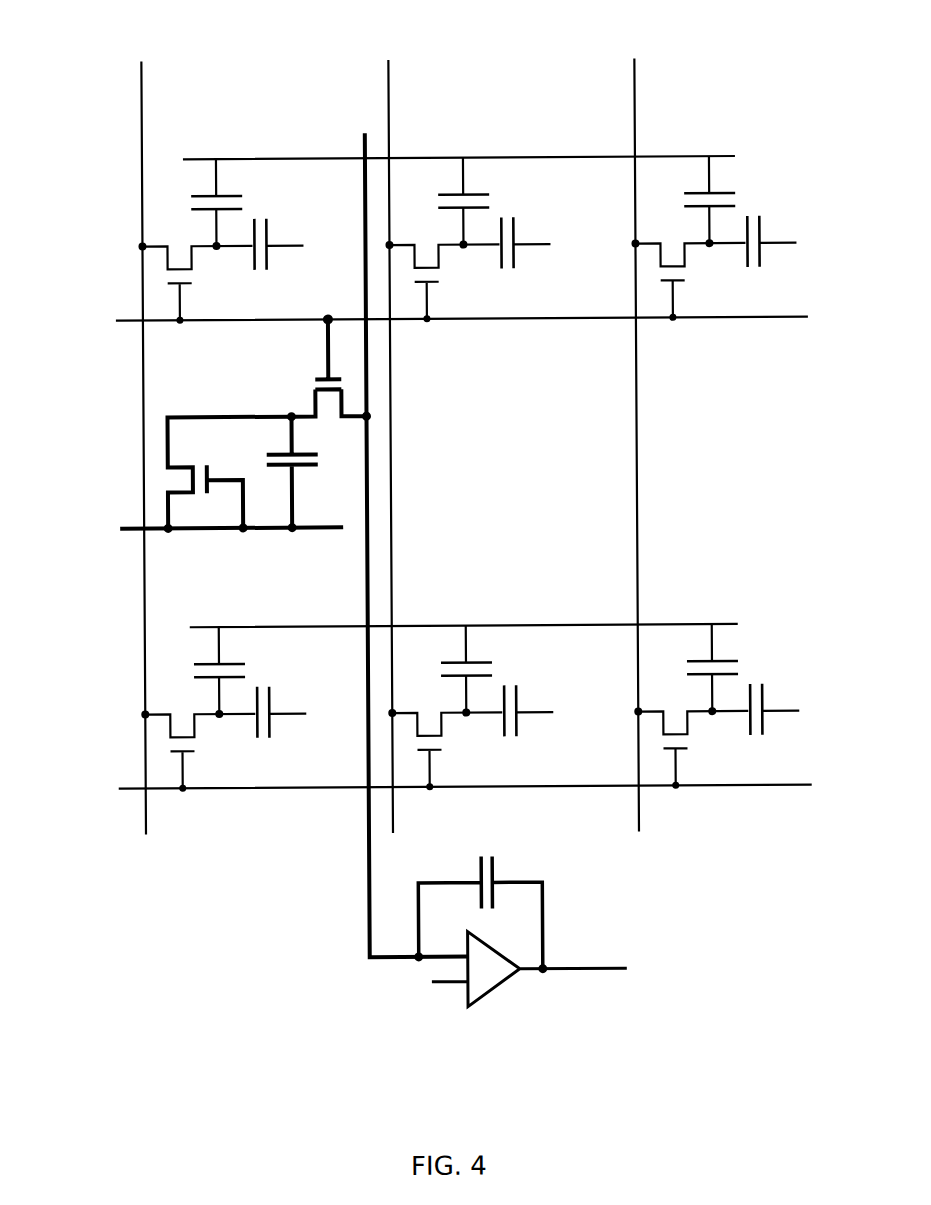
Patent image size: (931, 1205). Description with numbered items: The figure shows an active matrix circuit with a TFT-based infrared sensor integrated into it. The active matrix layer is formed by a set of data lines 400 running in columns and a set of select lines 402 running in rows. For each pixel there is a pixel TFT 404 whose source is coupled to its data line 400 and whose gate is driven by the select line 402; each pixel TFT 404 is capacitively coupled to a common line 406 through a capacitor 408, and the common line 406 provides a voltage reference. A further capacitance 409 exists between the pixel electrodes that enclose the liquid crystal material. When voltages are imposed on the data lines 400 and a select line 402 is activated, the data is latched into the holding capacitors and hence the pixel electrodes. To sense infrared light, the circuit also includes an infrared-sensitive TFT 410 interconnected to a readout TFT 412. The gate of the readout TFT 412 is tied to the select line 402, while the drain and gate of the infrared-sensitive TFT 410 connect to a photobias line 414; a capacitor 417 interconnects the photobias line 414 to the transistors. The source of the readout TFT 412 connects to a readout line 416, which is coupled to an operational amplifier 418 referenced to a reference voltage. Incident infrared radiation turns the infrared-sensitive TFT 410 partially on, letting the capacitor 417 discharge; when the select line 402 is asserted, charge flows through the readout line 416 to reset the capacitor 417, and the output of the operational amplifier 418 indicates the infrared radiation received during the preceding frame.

The data line 400 is at (144, 121).
The select line 402 is at (788, 319).
The pixel TFT 404 is at (206, 275).
The common line 406 is at (537, 158).
The capacitor 408 is at (188, 203).
The capacitance 409 is at (261, 212).
The infrared-sensitive TFT 410 is at (202, 459).
The readout TFT 412 is at (305, 388).
The photobias line 414 is at (267, 533).
The readout line 416 is at (366, 825).
The capacitor 417 is at (328, 461).
The operational amplifier 418 is at (490, 993).